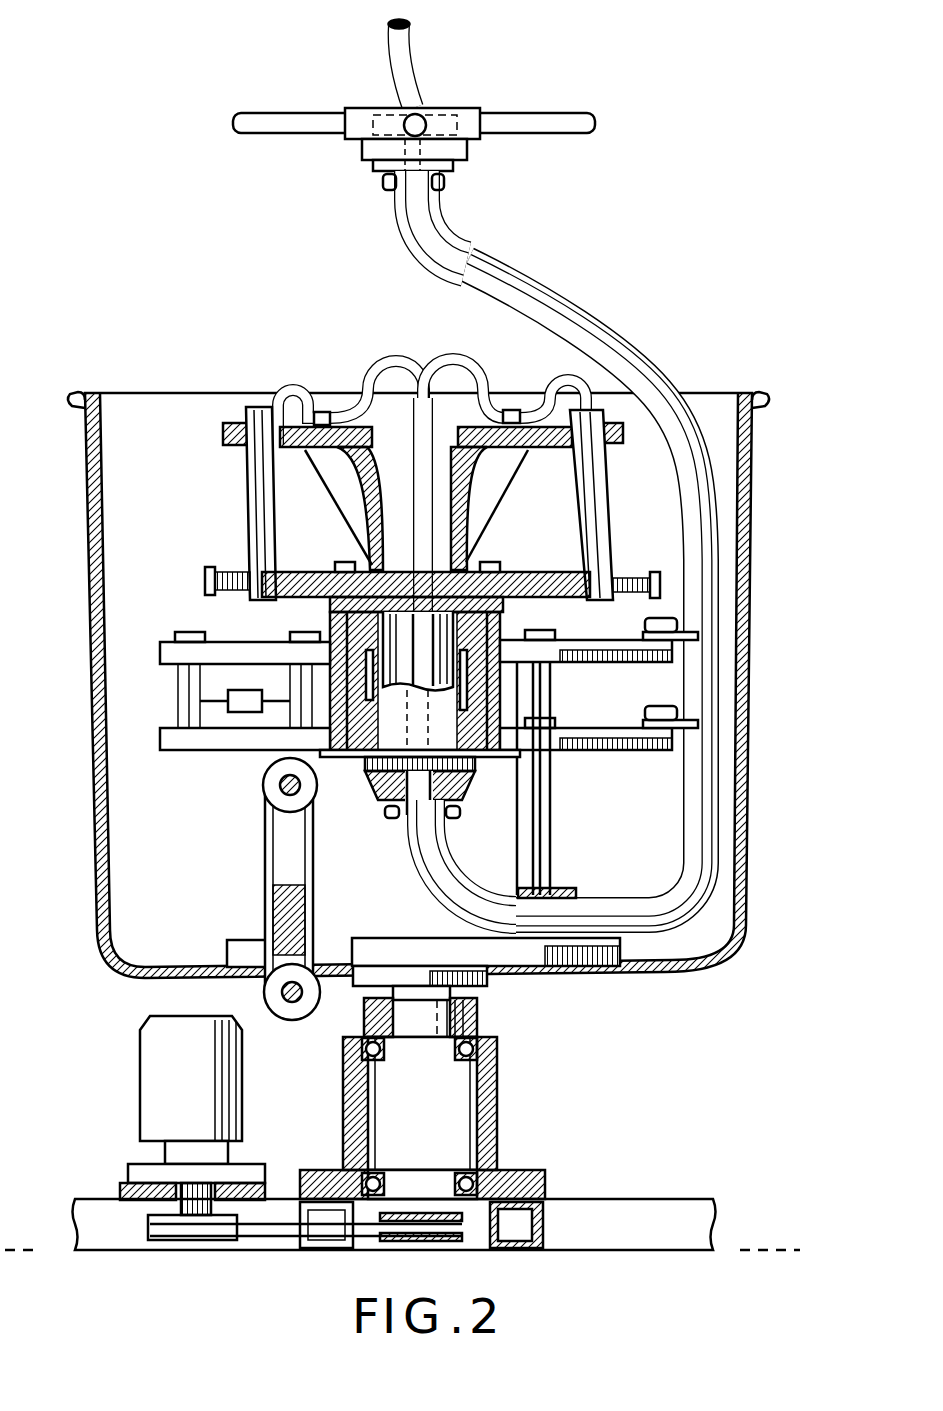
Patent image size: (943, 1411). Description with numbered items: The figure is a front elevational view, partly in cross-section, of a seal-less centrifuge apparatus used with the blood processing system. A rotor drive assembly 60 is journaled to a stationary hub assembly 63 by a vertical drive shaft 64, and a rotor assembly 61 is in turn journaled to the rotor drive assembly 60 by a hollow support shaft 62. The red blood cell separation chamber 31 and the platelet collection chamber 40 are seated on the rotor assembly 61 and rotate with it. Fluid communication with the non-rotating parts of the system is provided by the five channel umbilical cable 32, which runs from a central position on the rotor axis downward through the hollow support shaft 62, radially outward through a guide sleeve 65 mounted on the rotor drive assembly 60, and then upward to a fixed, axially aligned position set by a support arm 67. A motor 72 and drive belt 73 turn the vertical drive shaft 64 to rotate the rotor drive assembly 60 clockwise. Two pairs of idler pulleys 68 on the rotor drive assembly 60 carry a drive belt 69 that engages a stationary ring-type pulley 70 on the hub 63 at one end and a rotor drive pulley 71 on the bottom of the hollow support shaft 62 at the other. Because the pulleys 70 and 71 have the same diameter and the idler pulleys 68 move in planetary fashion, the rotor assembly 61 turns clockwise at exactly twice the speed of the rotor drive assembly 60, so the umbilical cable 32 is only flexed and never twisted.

The red blood cell separation chamber 31 is at (250, 510).
The five channel umbilical cable 32 is at (432, 870).
The platelet collection chamber 40 is at (598, 497).
The rotor drive assembly 60 is at (564, 641).
The rotor assembly 61 is at (543, 445).
The hollow support shaft 62 is at (455, 678).
The stationary hub assembly 63 is at (490, 1088).
The vertical drive shaft 64 is at (426, 1000).
The guide sleeve 65 is at (446, 843).
The support arm 67 is at (520, 131).
The idler pulleys 68 is at (262, 785).
The drive belt 69 is at (265, 860).
The stationary ring-type pulley 70 is at (470, 1030).
The rotor drive pulley 71 is at (362, 775).
The motor 72 is at (150, 1080).
The drive belt 73 is at (268, 1242).